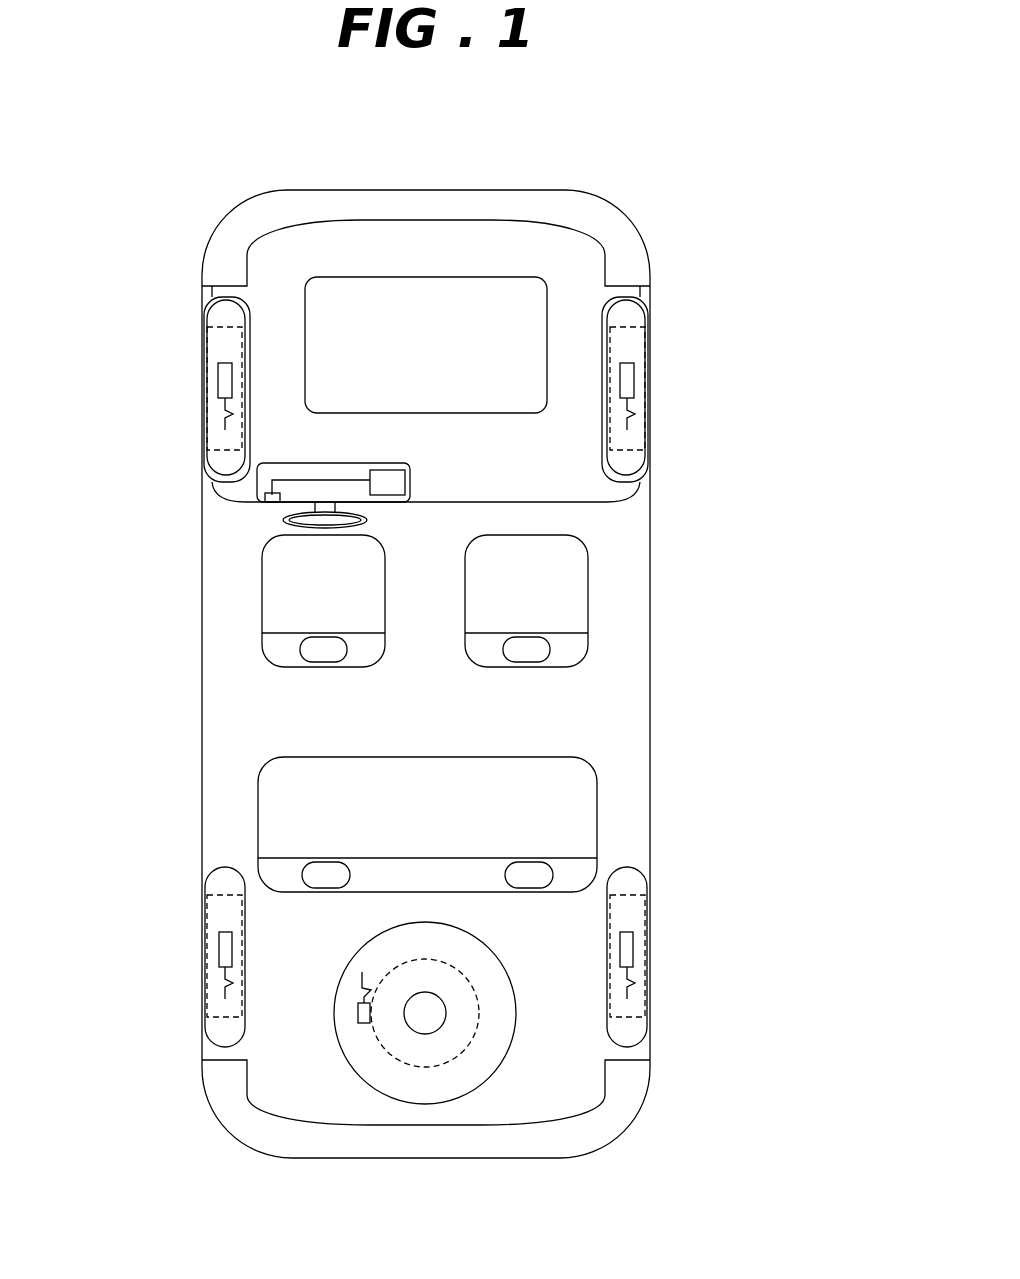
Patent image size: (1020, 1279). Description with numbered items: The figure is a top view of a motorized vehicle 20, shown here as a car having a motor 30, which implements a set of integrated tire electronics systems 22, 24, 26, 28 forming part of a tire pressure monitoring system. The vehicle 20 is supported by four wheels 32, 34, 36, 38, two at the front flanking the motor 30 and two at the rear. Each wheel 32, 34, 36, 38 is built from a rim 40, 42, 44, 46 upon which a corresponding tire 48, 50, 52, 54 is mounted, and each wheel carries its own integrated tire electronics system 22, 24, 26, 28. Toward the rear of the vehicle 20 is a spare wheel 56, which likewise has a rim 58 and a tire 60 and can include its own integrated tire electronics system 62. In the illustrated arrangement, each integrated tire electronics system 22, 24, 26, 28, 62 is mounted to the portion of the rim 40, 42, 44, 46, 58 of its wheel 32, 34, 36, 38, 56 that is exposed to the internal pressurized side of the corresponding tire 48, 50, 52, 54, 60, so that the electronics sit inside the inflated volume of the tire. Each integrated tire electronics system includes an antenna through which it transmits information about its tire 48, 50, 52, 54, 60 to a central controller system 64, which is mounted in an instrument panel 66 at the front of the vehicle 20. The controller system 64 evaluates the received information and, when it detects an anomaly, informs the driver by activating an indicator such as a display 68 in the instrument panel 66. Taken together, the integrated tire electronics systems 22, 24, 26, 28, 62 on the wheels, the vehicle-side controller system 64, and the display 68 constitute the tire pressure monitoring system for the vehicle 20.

The motorized vehicle 20 is at (616, 130).
The integrated tire electronics system 22 is at (630, 383).
The integrated tire electronics system 24 is at (222, 383).
The integrated tire electronics system 26 is at (632, 953).
The integrated tire electronics system 28 is at (222, 953).
The motor 30 is at (423, 287).
The wheel 32 is at (686, 377).
The wheel 34 is at (170, 377).
The wheel 36 is at (689, 945).
The wheel 38 is at (167, 947).
The rim 40 is at (629, 325).
The rim 42 is at (223, 325).
The rim 44 is at (629, 895).
The rim 46 is at (223, 895).
The tire 48 is at (639, 456).
The tire 50 is at (213, 456).
The tire 52 is at (641, 1024).
The tire 54 is at (213, 1024).
The spare wheel 56 is at (447, 1057).
The rim 58 is at (428, 958).
The tire 60 is at (507, 972).
The integrated tire electronics system 62 is at (358, 1012).
The central controller system 64 is at (395, 478).
The instrument panel 66 is at (289, 490).
The display 68 is at (268, 502).